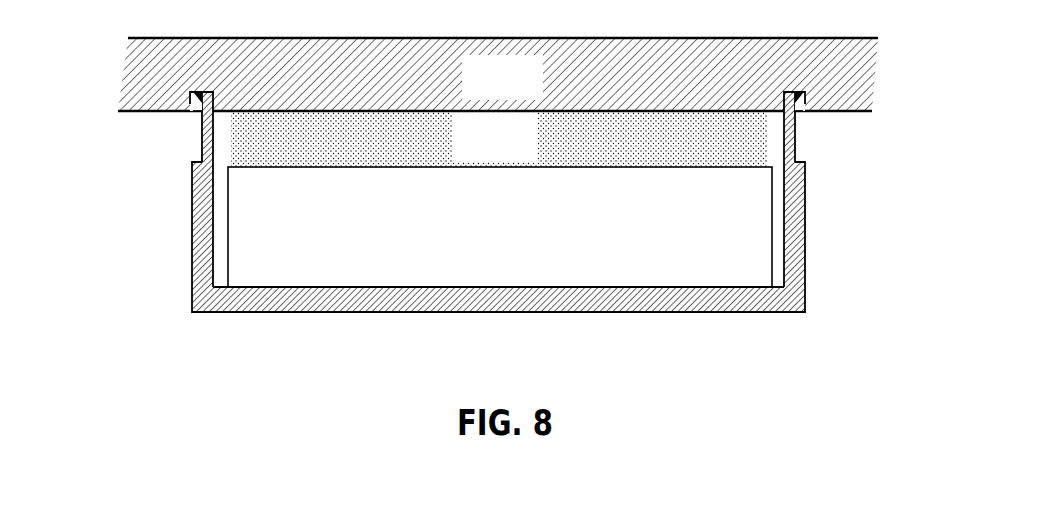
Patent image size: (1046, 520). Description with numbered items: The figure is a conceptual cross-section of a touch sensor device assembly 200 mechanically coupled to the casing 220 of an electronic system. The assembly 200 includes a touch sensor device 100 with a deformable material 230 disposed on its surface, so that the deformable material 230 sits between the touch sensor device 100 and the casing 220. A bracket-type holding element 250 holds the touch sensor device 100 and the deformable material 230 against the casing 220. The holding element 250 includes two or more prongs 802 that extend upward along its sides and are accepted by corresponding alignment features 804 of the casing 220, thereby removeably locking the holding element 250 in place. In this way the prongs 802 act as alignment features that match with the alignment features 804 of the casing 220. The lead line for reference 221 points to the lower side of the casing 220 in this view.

The touch sensor device 100 is at (522, 242).
The touch sensor device assembly 200 is at (164, 257).
The casing 220 is at (525, 92).
The bottom surface of lid 221 is at (155, 112).
The deformable material 230 is at (517, 152).
The holding element 250 is at (492, 308).
The prongs 802 is at (202, 140).
The alignment features 804 is at (196, 97).